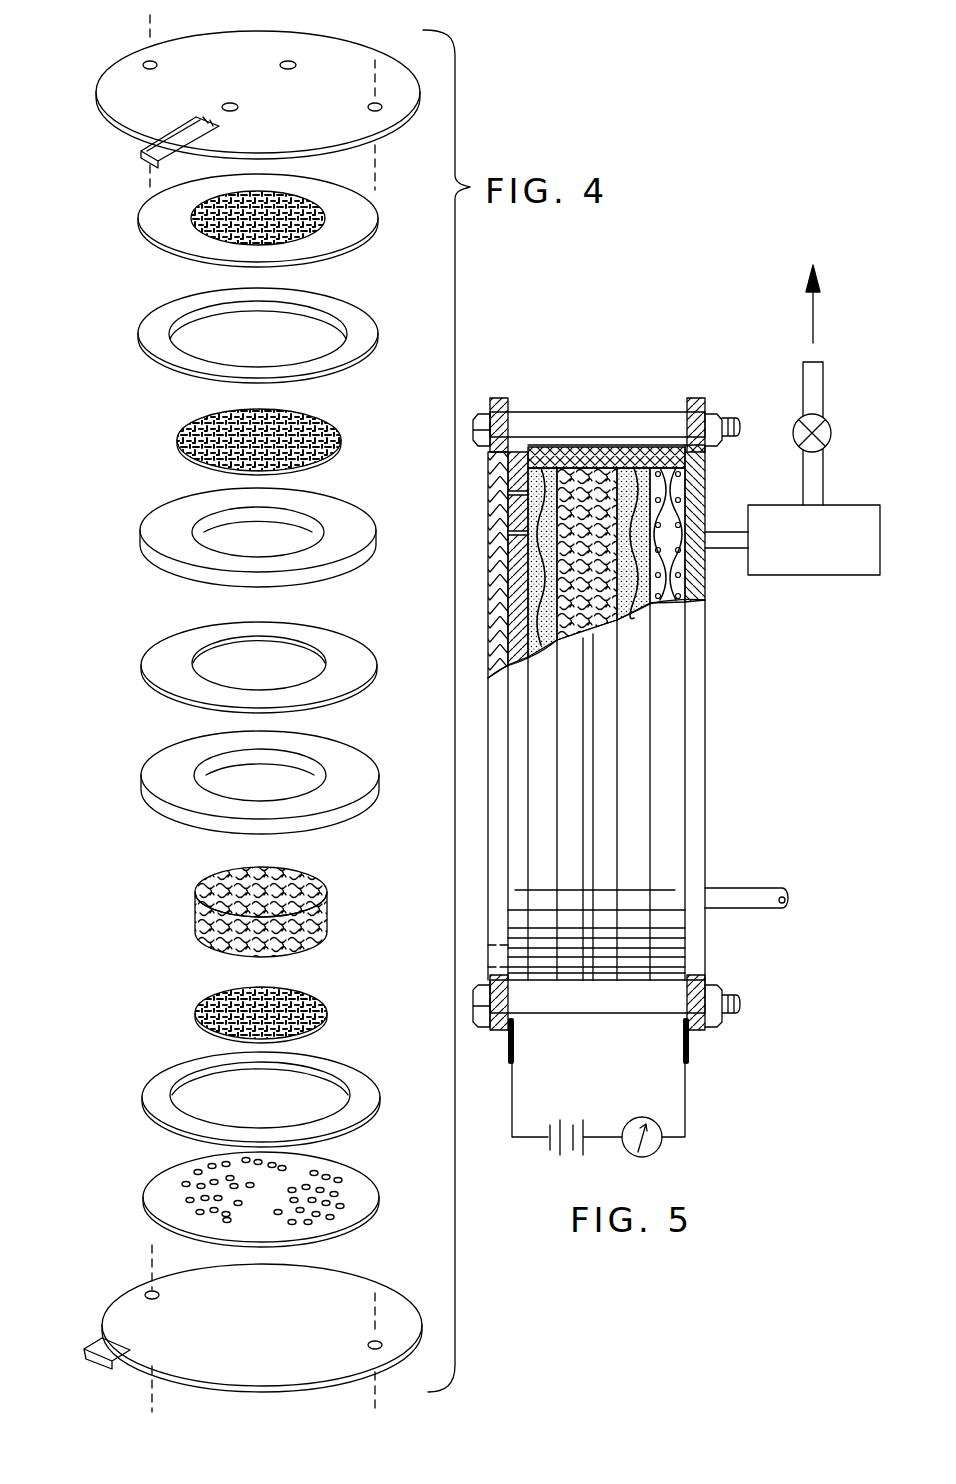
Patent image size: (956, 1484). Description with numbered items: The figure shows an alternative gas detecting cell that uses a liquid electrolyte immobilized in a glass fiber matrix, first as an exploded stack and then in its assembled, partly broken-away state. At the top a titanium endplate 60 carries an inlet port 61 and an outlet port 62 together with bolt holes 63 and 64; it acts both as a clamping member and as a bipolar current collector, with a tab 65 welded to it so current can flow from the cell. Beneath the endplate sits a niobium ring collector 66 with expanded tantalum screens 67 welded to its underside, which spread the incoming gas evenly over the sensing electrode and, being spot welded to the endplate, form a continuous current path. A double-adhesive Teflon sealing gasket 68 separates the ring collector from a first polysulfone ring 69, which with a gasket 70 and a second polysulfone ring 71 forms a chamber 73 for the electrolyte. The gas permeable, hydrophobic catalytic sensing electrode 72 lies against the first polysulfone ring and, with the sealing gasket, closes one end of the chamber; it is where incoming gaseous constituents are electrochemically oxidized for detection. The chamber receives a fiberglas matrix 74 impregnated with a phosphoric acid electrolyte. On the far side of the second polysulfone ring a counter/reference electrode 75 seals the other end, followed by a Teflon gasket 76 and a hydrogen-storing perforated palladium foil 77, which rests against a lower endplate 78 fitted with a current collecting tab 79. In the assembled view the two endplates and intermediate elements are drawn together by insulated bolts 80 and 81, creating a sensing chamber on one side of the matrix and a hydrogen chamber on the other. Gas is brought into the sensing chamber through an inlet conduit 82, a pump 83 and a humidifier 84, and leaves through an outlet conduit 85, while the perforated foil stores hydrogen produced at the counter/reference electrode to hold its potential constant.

In FIG. 4, the titanium endplate 60 is at (324, 35).
In FIG. 4, the inlet port 61 is at (238, 105).
In FIG. 4, the outlet port 62 is at (294, 66).
In FIG. 4, the bolt hole 63 is at (150, 62).
In FIG. 4, the bolt hole 64 is at (378, 110).
In FIG. 4, the tab 65 is at (141, 152).
In FIG. 4, the niobium ring collector 66 is at (277, 216).
In FIG. 5, the niobium ring collector 66 is at (673, 453).
In FIG. 4, the expanded tantalum screens 67 is at (290, 195).
In FIG. 5, the expanded tantalum screens 67 is at (670, 567).
In FIG. 4, the sealing gasket 68 is at (158, 320).
In FIG. 5, the sealing gasket 68 is at (600, 458).
In FIG. 4, the first polysulfone ring 69 is at (358, 520).
In FIG. 4, the gasket 70 is at (353, 650).
In FIG. 4, the second polysulfone ring 71 is at (350, 770).
In FIG. 4, the sensing electrode 72 is at (197, 415).
In FIG. 5, the sensing electrode 72 is at (617, 606).
In FIG. 4, the chamber 73 is at (250, 537).
In FIG. 4, the fiberglas matrix 74 is at (325, 908).
In FIG. 5, the fiberglas matrix 74 is at (588, 628).
In FIG. 4, the counter/reference electrode 75 is at (212, 994).
In FIG. 5, the counter/reference electrode 75 is at (527, 642).
In FIG. 4, the Teflon gasket 76 is at (358, 1082).
In FIG. 4, the perforated palladium foil 77 is at (168, 1175).
In FIG. 5, the perforated palladium foil 77 is at (520, 458).
In FIG. 4, the lower endplate 78 is at (358, 1285).
In FIG. 4, the current collecting tab 79 is at (95, 1346).
In FIG. 5, the current collecting tab 79 is at (507, 1040).
In FIG. 5, the insulated bolt 80 is at (652, 420).
In FIG. 5, the insulated bolt 81 is at (516, 533).
In FIG. 5, the inlet conduit 82 is at (730, 548).
In FIG. 5, the pump 83 is at (838, 440).
In FIG. 5, the humidifier 84 is at (858, 575).
In FIG. 5, the outlet conduit 85 is at (750, 890).